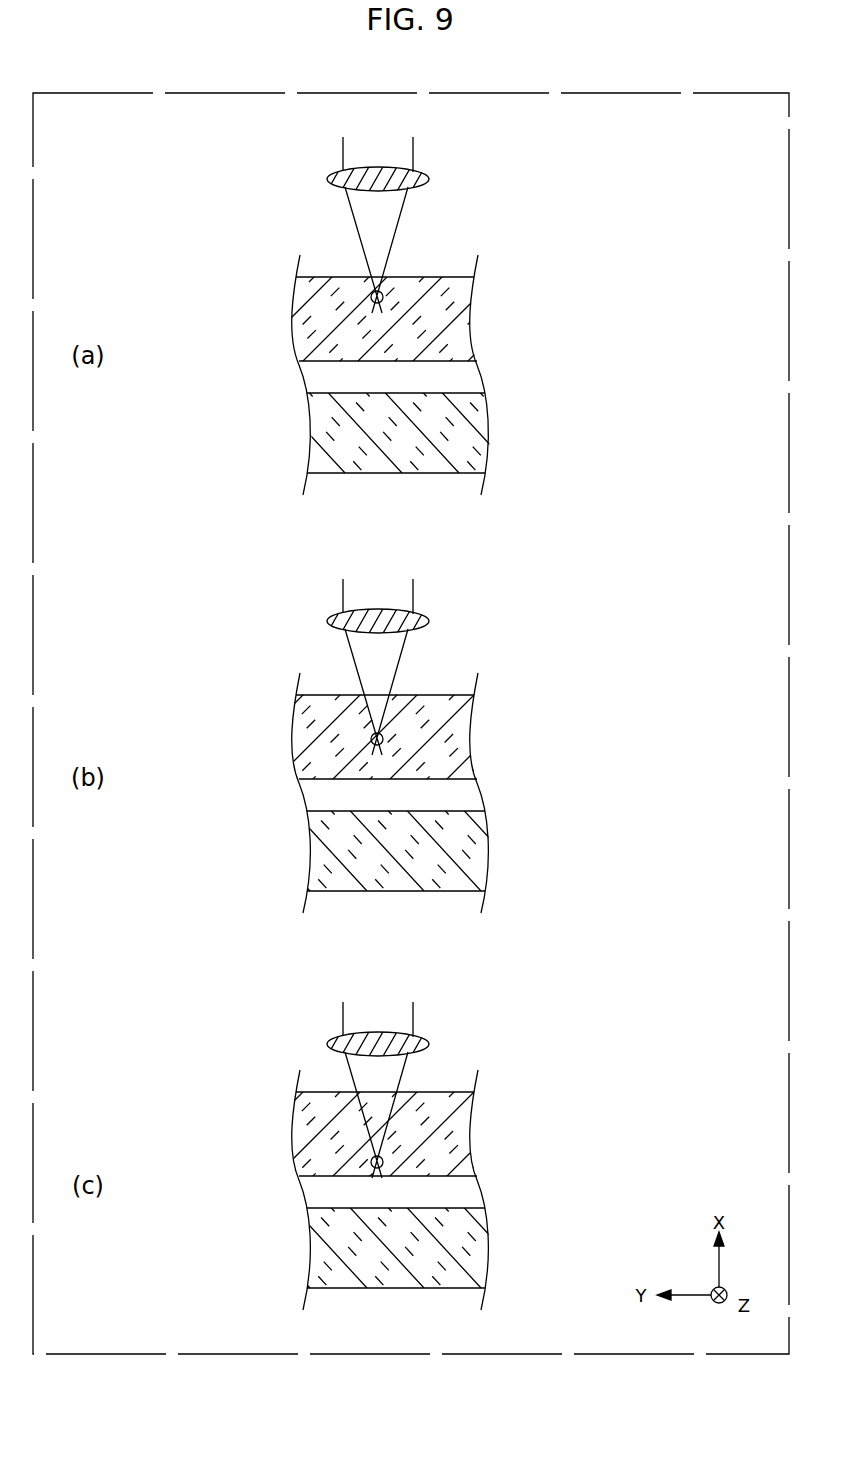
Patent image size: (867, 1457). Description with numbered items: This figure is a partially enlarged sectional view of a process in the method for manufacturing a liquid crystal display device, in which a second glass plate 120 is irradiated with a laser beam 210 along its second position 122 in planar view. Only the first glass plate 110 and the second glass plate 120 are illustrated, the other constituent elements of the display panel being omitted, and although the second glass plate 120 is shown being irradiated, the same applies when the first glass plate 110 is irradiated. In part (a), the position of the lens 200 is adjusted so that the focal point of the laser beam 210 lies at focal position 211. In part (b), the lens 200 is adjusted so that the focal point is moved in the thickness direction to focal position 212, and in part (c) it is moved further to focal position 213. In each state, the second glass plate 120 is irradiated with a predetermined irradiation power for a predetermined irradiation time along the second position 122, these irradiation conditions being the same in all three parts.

The first glass plate 110 is at (472, 435).
The second glass plate 120 is at (462, 309).
The second position 122 is at (392, 270).
The lens 200 is at (417, 172).
The laser beam 210 is at (342, 152).
The focal position 211 is at (371, 297).
The focal position 212 is at (371, 739).
The focal position 213 is at (371, 1162).